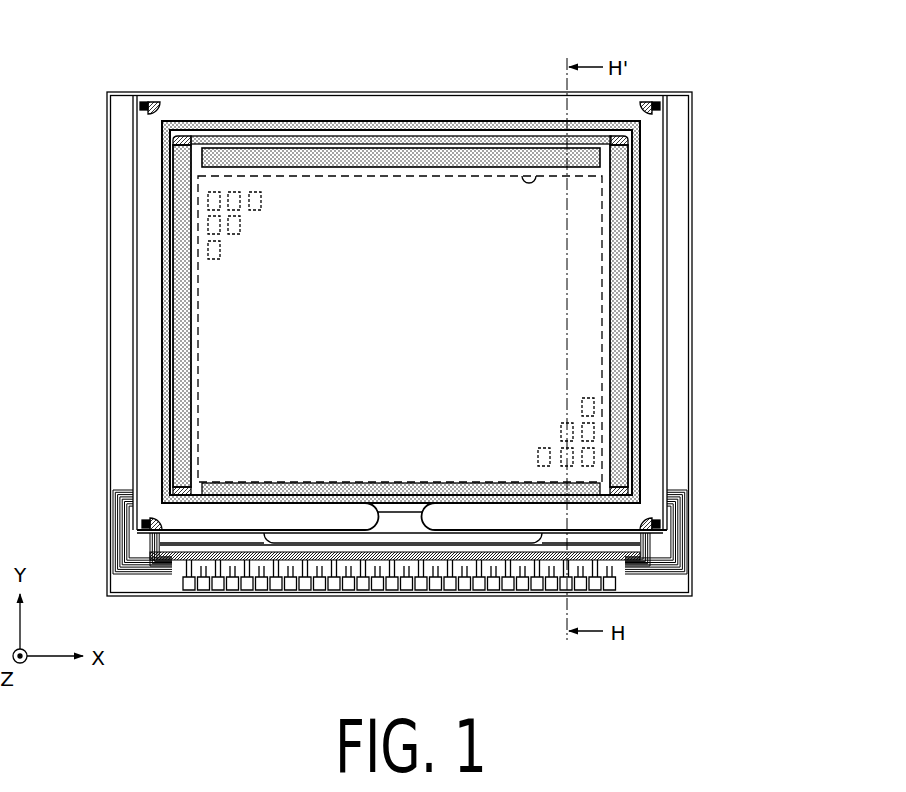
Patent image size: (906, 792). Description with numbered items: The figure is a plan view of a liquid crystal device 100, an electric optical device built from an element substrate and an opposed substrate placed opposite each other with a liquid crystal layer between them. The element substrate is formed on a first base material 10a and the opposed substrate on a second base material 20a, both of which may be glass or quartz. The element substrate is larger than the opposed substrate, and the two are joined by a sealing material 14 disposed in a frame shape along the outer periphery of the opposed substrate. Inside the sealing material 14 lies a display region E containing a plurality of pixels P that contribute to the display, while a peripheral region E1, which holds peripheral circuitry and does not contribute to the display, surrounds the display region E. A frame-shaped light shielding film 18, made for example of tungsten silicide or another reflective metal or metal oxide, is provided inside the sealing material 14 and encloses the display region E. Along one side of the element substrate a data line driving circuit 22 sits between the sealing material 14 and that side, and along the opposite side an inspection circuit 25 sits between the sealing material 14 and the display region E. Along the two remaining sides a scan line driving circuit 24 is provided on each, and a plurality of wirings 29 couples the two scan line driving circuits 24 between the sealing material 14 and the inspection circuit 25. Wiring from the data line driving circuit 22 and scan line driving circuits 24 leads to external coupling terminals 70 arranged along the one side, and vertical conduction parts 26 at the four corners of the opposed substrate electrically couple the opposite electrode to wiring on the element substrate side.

The liquid crystal device 100 is at (684, 56).
The sealing material 14 is at (652, 218).
The first base material 10a is at (218, 92).
The second base material 20a is at (262, 121).
The wirings 29 is at (365, 136).
The scan line driving circuit 24 is at (180, 330).
The peripheral region E1 is at (192, 137).
The inspection circuit 25 is at (450, 148).
The display region E is at (530, 176).
The light shielding film 18 is at (272, 487).
The pixel P is at (262, 205).
The vertical conduction part 26 is at (140, 106).
The data line driving circuit 22 is at (178, 545).
The external coupling terminals 70 is at (272, 590).